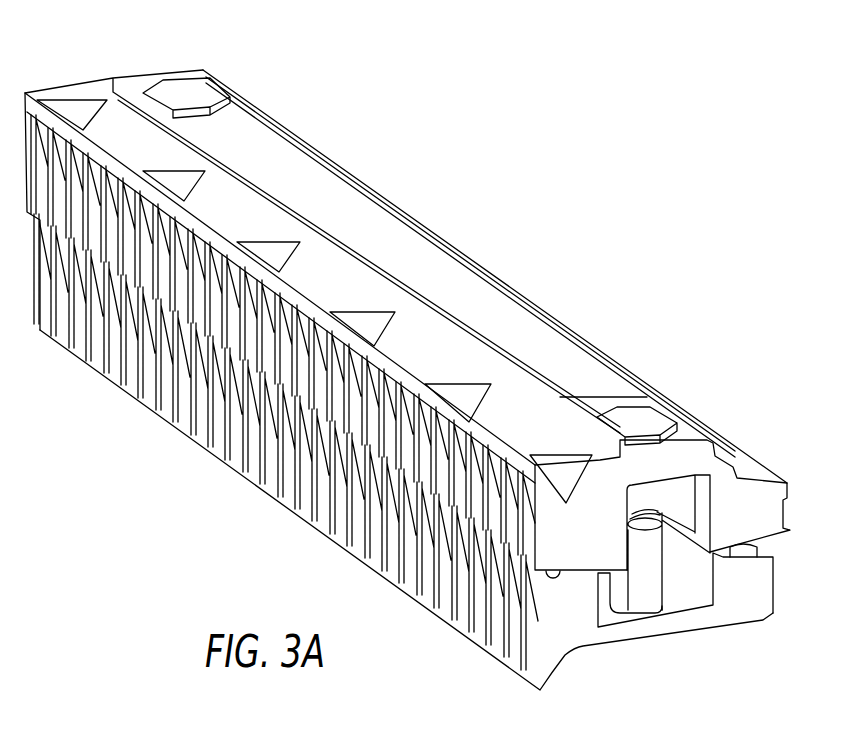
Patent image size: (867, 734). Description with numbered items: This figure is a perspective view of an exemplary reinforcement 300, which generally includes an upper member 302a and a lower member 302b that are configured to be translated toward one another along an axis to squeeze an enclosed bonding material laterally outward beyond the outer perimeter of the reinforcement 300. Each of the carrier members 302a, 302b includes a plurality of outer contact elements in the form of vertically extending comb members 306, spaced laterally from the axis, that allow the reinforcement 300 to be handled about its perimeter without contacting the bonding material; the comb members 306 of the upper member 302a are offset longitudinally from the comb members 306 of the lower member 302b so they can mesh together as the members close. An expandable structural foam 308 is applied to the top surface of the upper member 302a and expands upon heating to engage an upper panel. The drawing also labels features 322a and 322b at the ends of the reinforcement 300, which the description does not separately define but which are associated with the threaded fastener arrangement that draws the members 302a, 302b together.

The reinforcement 300 is at (569, 157).
The upper member 302a is at (740, 497).
The lower member 302b is at (743, 590).
The comb members 306 is at (408, 562).
The structural foam 308 is at (370, 228).
The first boss 322a is at (188, 82).
The second boss 322b is at (636, 412).